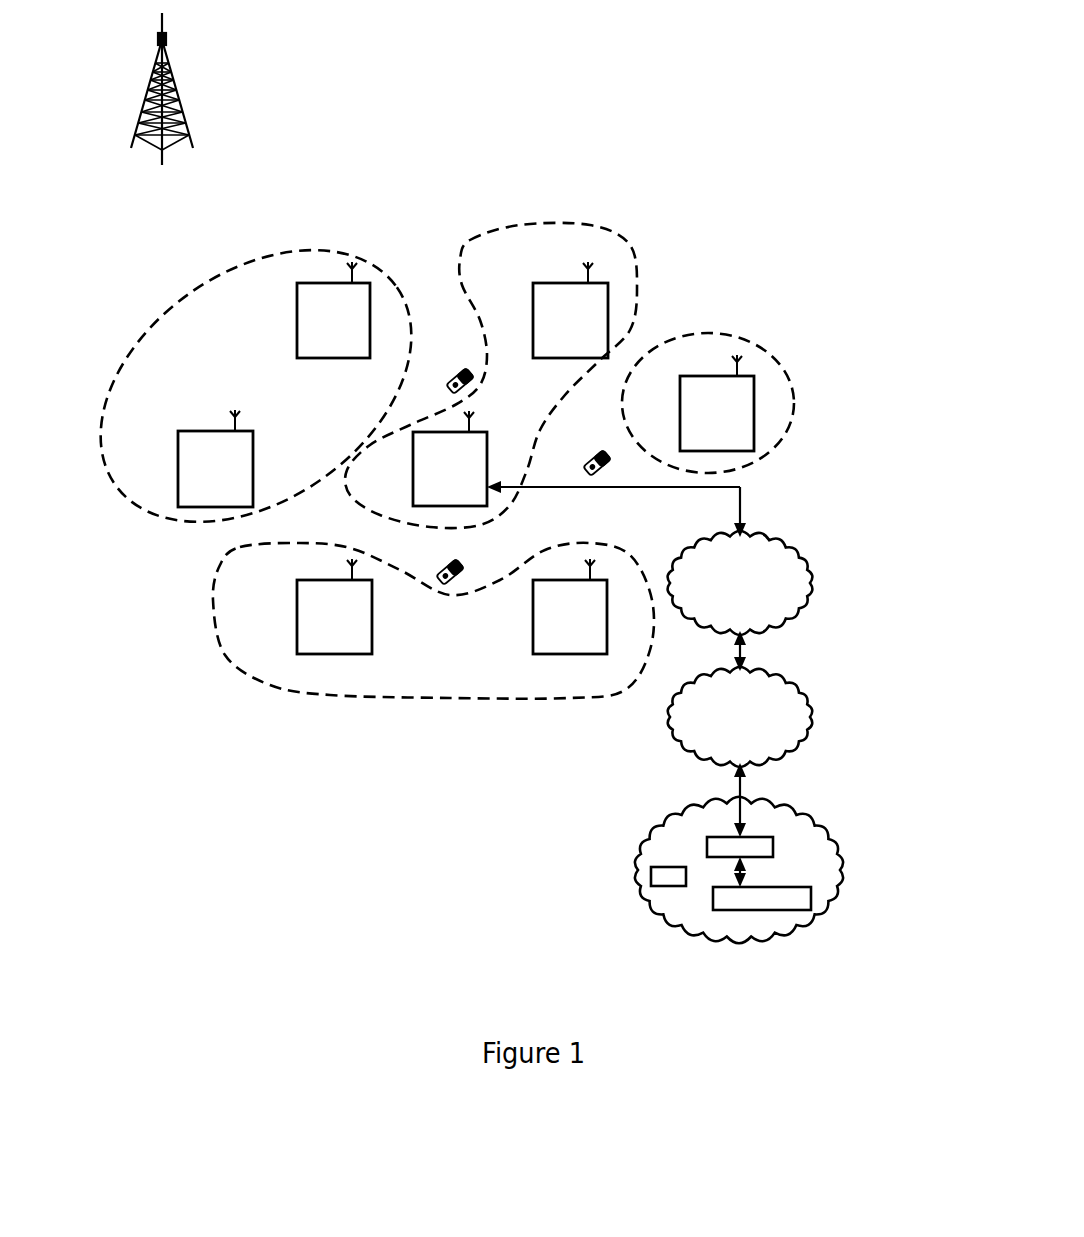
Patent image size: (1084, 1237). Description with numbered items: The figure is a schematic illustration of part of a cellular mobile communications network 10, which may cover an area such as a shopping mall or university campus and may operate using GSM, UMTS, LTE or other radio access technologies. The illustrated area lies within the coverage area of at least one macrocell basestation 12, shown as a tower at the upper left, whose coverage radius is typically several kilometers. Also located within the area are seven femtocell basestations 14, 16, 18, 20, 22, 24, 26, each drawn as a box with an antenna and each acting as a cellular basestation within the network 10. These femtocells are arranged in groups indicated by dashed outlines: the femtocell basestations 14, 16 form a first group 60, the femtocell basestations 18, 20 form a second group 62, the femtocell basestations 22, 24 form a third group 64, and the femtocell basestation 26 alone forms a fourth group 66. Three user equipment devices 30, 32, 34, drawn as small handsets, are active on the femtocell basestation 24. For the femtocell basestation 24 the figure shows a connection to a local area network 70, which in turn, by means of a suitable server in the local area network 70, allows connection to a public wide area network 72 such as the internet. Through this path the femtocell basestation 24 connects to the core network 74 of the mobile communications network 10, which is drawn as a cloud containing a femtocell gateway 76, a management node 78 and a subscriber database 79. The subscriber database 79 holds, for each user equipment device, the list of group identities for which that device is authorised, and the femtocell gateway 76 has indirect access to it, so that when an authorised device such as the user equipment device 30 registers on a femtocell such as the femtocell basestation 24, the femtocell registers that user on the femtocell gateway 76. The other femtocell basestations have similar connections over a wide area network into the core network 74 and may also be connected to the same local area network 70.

The cellular mobile communications network 10 is at (568, 88).
The macrocell basestation 12 is at (180, 85).
The femtocell basestation 14 is at (178, 462).
The femtocell basestation 16 is at (297, 310).
The femtocell basestation 18 is at (297, 608).
The femtocell basestation 20 is at (533, 645).
The femtocell basestation 22 is at (533, 313).
The femtocell basestation 24 is at (413, 494).
The femtocell basestation 26 is at (680, 417).
The user equipment device 30 is at (450, 380).
The user equipment device 32 is at (590, 462).
The user equipment device 34 is at (440, 570).
The first group 60 is at (388, 270).
The second group 62 is at (213, 600).
The third group 64 is at (624, 243).
The fourth group 66 is at (758, 348).
The local area network 70 is at (796, 548).
The public wide area network 72 is at (796, 680).
The core network 74 is at (844, 850).
The femtocell gateway 76 is at (763, 837).
The management node 78 is at (793, 910).
The subscriber database 79 is at (665, 886).